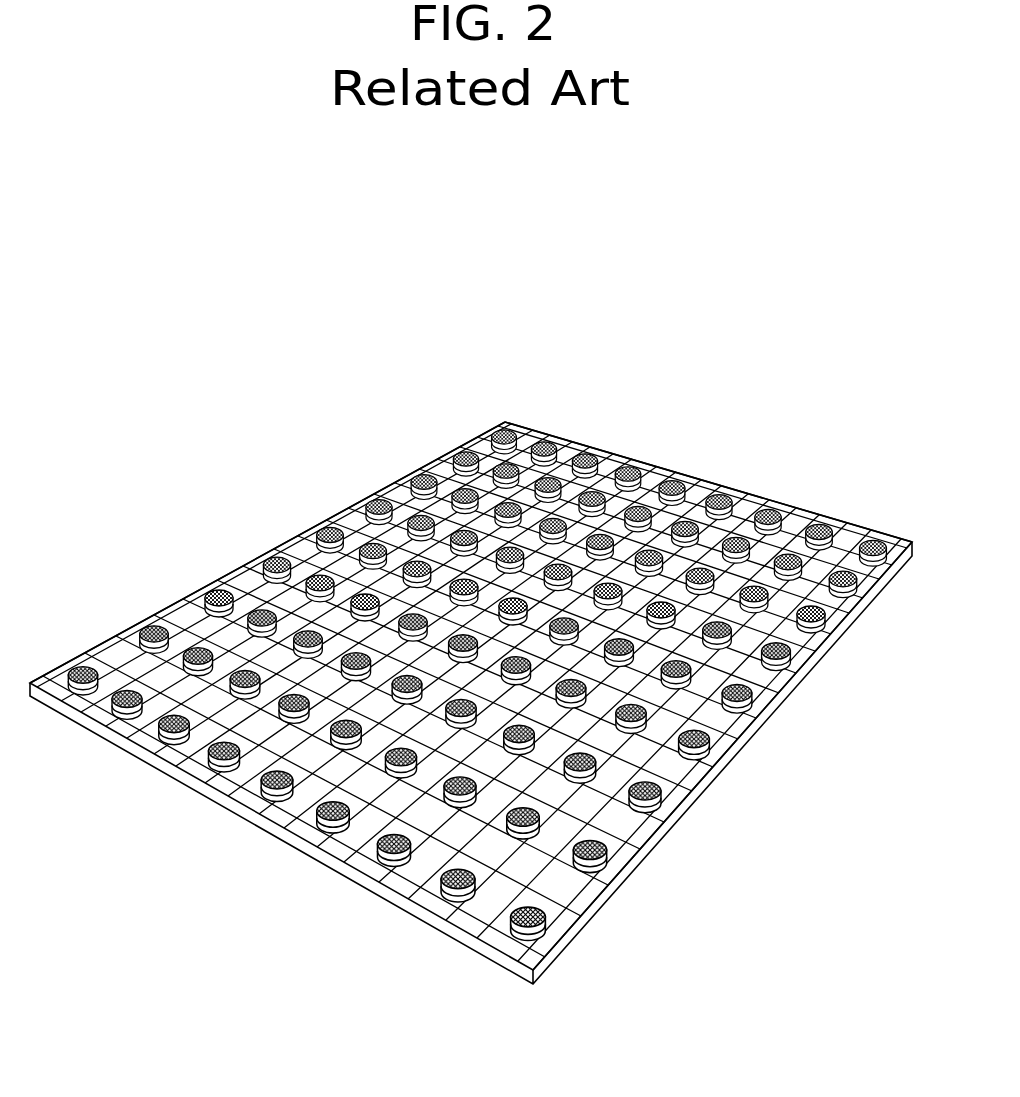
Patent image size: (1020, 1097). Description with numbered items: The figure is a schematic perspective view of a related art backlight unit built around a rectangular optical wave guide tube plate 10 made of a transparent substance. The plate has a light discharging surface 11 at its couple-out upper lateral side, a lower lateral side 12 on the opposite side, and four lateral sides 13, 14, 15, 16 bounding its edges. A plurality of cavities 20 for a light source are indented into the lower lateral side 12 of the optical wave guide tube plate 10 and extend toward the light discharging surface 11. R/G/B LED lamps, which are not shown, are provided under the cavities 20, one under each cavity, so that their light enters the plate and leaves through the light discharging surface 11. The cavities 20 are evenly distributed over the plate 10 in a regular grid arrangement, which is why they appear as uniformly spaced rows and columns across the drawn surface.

The optical wave guide tube plate 10 is at (580, 406).
The light discharging surface 11 is at (83, 652).
The lower lateral side 12 is at (80, 738).
The lateral side 13 is at (262, 826).
The lateral side 14 is at (718, 475).
The lateral side 15 is at (262, 548).
The lateral side 16 is at (737, 753).
The cavities 20 is at (460, 900).